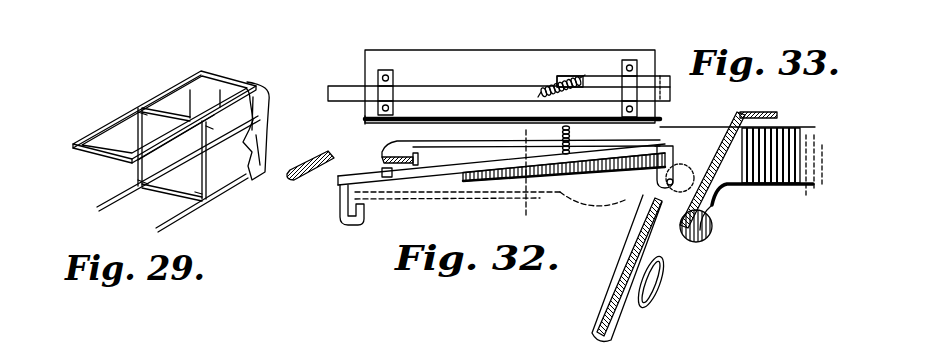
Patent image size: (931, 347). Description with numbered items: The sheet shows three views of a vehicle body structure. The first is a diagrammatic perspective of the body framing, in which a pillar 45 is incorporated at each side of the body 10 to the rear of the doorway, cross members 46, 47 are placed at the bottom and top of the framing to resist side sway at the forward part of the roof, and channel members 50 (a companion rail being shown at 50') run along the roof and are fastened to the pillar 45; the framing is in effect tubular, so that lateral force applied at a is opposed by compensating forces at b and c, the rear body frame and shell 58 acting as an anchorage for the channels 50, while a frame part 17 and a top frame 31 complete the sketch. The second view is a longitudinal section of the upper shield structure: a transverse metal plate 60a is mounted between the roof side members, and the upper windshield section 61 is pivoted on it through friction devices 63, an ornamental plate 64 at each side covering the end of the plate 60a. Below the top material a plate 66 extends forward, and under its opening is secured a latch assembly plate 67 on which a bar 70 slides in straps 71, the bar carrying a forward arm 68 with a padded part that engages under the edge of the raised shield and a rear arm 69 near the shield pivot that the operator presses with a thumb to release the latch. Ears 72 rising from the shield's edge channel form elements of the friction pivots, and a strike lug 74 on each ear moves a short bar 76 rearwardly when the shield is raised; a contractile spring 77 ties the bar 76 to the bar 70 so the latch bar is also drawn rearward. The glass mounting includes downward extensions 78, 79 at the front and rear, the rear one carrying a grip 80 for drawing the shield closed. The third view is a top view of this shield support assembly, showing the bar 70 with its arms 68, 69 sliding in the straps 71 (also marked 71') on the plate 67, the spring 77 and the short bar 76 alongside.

In FIG. 29, the body 10 is at (260, 147).
In FIG. 32, the frame rail end 17 is at (340, 154).
In FIG. 29, the top frame 31 is at (88, 151).
In FIG. 29, the pillar 45 is at (130, 128).
In FIG. 29, the cross member 46 is at (160, 196).
In FIG. 29, the cross member 47 is at (167, 110).
In FIG. 29, the channel member 50 is at (181, 99).
In FIG. 32, the channel member 50 is at (564, 184).
In FIG. 29, the lower rear rail 50' is at (202, 209).
In FIG. 29, the rear body frame and shell 58 is at (276, 93).
In FIG. 32, the transverse metal plate 60a is at (770, 188).
In FIG. 32, the upper windshield section 61 is at (592, 320).
In FIG. 32, the friction devices 63 is at (735, 216).
In FIG. 32, the plate of ornamental form 64 is at (745, 210).
In FIG. 32, the plate 66 is at (737, 135).
In FIG. 33, the latch assembly plate 67 is at (499, 67).
In FIG. 32, the latch assembly plate 67 is at (372, 183).
In FIG. 33, the arm 68 is at (333, 90).
In FIG. 32, the arm 68 is at (334, 207).
In FIG. 33, the arm 69 is at (672, 93).
In FIG. 32, the arm 69 is at (625, 187).
In FIG. 33, the bar 70 is at (449, 85).
In FIG. 32, the bar 70 is at (444, 168).
In FIG. 32, the straps 71 is at (715, 200).
In FIG. 33, the bracket 71' is at (522, 70).
In FIG. 32, the bracket 71' is at (664, 167).
In FIG. 32, the ears 72 is at (712, 227).
In FIG. 32, the strike lug 74 is at (650, 196).
In FIG. 33, the short bar 76 is at (572, 78).
In FIG. 33, the contractile spring 77 is at (579, 80).
In FIG. 32, the contractile spring 77 is at (566, 155).
In FIG. 32, the downward extension 78 is at (606, 290).
In FIG. 32, the downward extension 79 is at (663, 274).
In FIG. 32, the grip 80 is at (660, 294).
In FIG. 29, the point of applied lateral force a is at (63, 141).
In FIG. 29, the point of compensating force b is at (127, 170).
In FIG. 29, the point of compensating force c is at (216, 208).